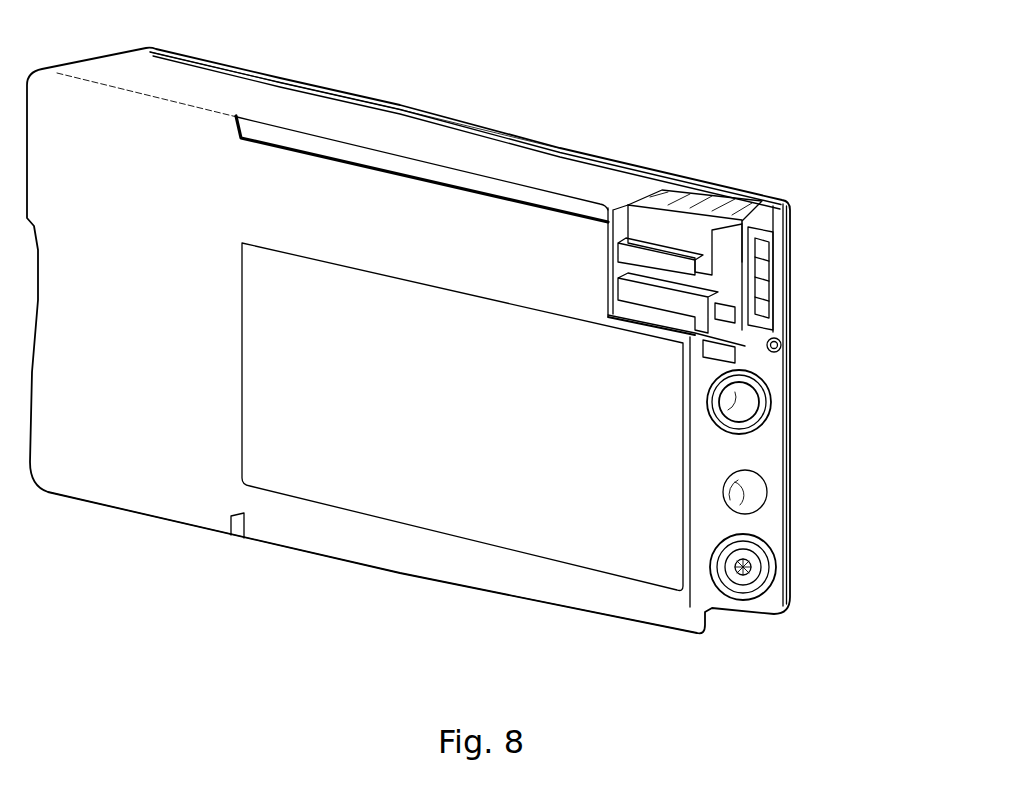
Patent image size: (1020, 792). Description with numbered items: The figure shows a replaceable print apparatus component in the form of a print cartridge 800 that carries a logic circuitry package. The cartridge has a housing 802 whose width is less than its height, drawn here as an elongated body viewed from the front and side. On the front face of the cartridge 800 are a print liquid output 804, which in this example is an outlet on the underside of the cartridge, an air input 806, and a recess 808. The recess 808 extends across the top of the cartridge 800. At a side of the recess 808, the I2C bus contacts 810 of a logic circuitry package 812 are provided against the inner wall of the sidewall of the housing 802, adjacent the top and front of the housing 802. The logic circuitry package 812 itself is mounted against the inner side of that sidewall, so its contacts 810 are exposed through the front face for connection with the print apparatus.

The print cartridge 800 is at (718, 103).
The housing 802 is at (318, 112).
The print liquid output 804 is at (319, 575).
The air input 806 is at (771, 408).
The recess 808 is at (799, 330).
The I2C bus contacts 810 is at (771, 284).
The logic circuitry package 812 is at (782, 303).